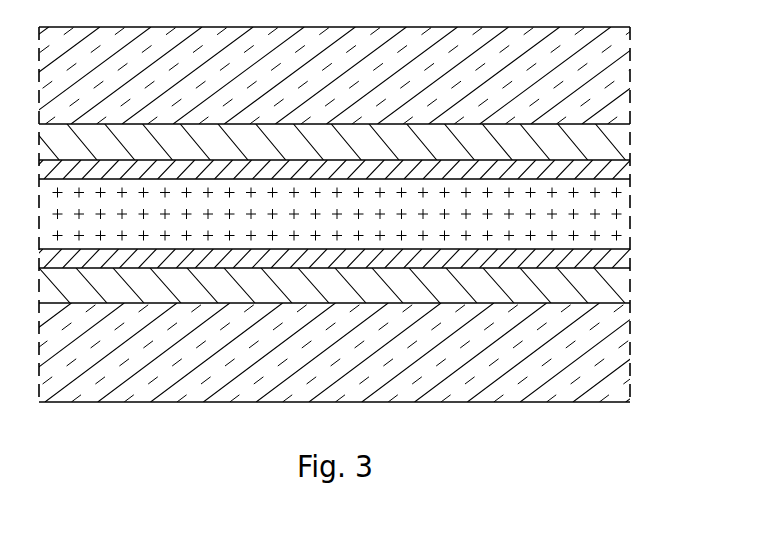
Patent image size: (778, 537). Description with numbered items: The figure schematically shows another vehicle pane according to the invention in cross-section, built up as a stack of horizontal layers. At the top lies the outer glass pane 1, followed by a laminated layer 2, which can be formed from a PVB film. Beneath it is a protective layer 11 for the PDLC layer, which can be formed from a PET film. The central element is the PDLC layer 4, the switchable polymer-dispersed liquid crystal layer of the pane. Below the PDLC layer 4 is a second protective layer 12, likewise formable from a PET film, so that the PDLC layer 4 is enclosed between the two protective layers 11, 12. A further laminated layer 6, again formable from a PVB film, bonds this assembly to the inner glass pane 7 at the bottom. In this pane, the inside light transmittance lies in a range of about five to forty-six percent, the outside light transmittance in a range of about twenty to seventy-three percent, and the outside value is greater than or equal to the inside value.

The outer glass pane 1 is at (632, 76).
The laminated layer 2 is at (632, 141).
The protective layer 11 is at (632, 169).
The PDLC layer 4 is at (632, 213).
The protective layer 12 is at (632, 259).
The laminated layer 6 is at (632, 285).
The inner glass pane 7 is at (632, 352).